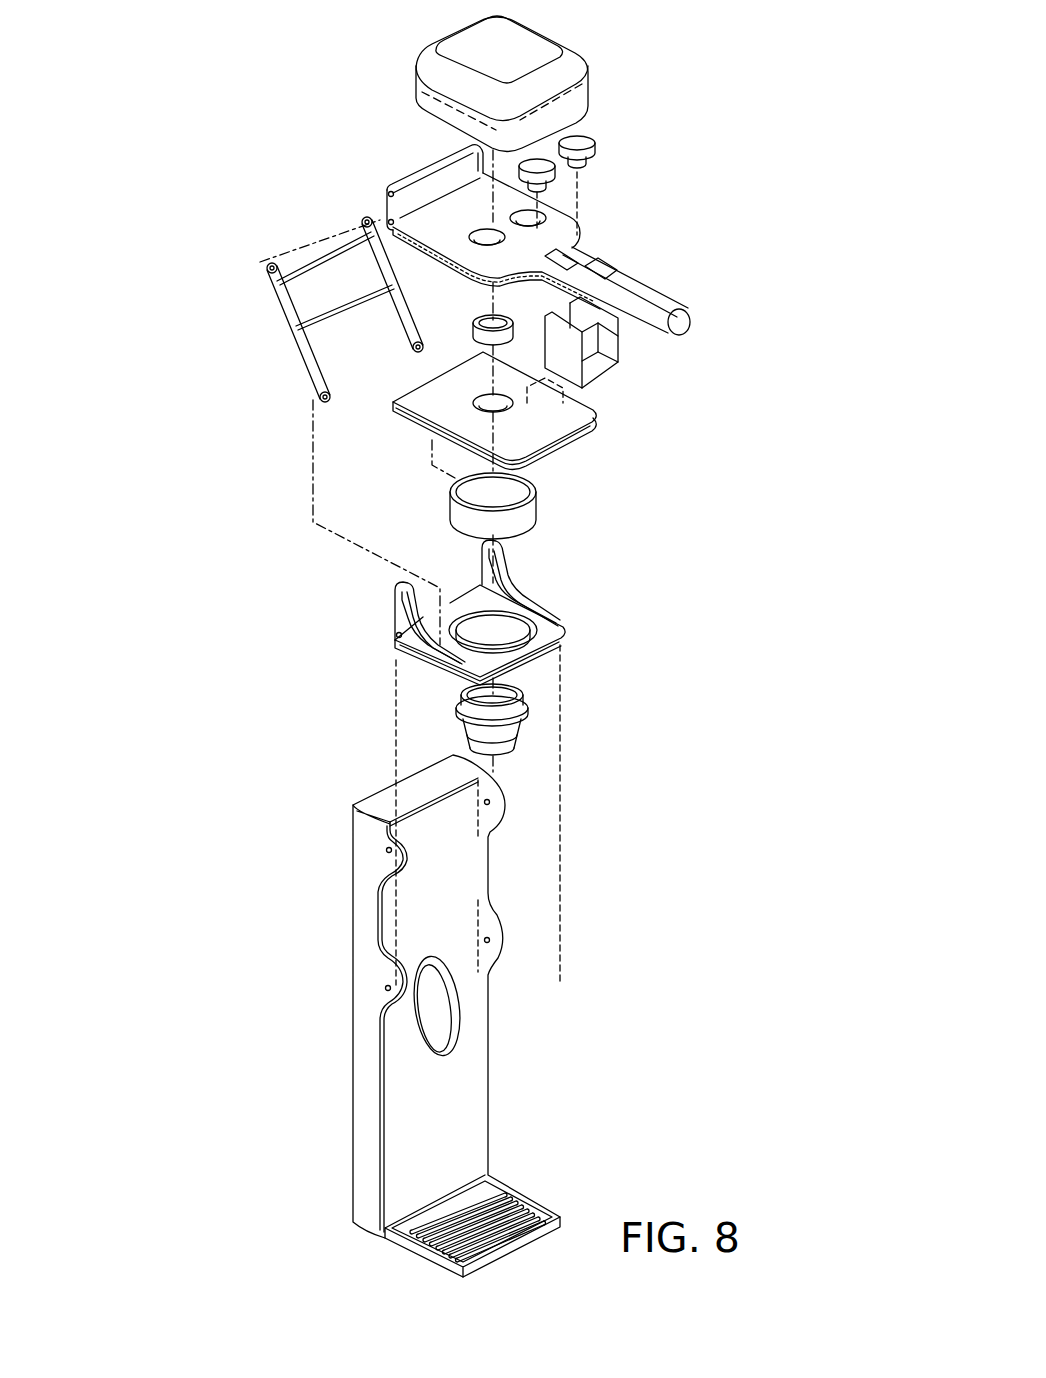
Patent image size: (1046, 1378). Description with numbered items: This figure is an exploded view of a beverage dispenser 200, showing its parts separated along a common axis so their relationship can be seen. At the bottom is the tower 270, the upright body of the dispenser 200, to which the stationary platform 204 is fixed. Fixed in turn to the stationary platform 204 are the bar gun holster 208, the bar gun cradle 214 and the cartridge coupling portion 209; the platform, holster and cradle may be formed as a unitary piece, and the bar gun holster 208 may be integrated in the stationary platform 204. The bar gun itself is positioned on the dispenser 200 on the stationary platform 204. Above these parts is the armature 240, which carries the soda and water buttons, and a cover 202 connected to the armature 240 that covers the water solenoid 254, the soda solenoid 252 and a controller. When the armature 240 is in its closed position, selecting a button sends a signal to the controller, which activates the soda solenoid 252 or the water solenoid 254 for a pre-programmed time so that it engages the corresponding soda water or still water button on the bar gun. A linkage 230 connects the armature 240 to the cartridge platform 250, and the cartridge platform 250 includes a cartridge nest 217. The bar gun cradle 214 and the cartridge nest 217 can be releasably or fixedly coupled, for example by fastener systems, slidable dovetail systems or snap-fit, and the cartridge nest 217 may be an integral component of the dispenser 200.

The dispenser 200 is at (212, 391).
The cover 202 is at (591, 49).
The stationary platform 204 is at (401, 429).
The bar gun holster 208 is at (462, 326).
The cartridge coupling portion 209 is at (552, 497).
The bar gun cradle 214 is at (620, 383).
The cartridge nest 217 is at (536, 735).
The linkage 230 is at (253, 287).
The armature 240 is at (696, 299).
The cartridge platform 250 is at (577, 620).
The soda solenoid 252 is at (564, 193).
The water solenoid 254 is at (611, 142).
The tower 270 is at (324, 1046).